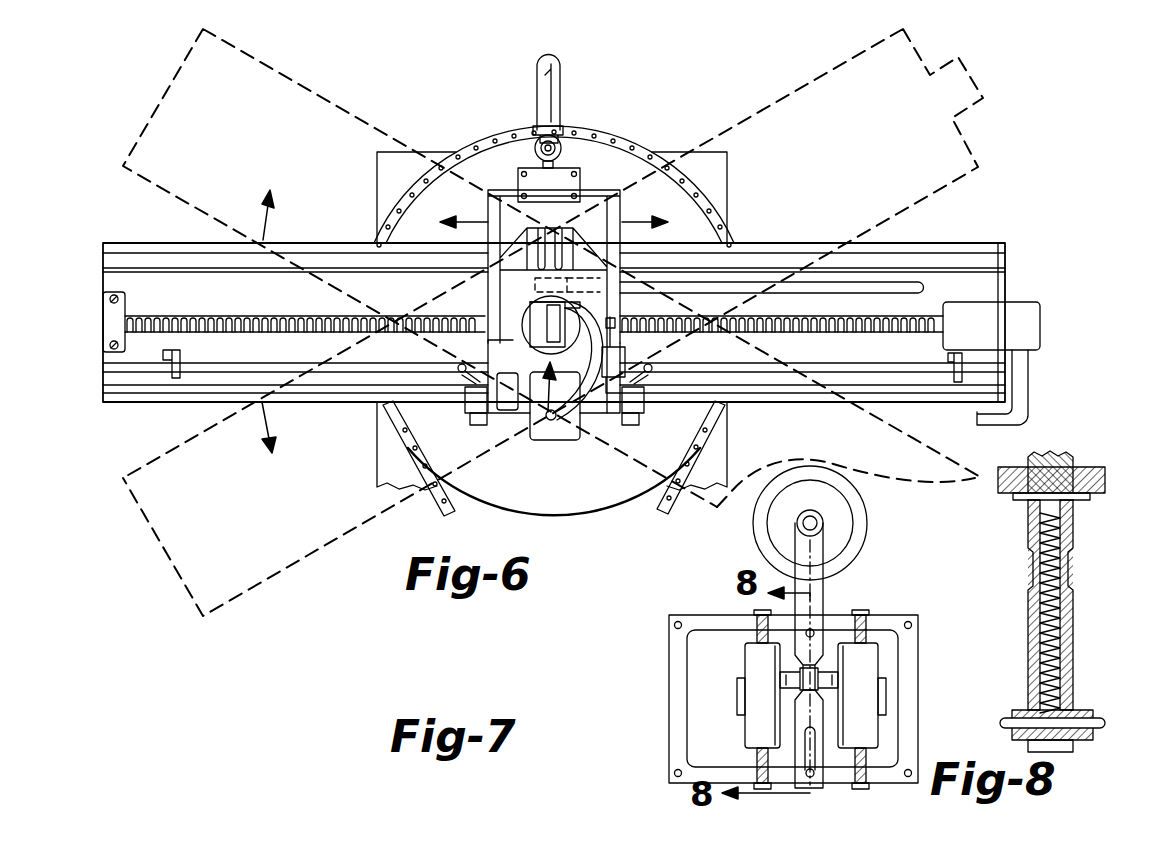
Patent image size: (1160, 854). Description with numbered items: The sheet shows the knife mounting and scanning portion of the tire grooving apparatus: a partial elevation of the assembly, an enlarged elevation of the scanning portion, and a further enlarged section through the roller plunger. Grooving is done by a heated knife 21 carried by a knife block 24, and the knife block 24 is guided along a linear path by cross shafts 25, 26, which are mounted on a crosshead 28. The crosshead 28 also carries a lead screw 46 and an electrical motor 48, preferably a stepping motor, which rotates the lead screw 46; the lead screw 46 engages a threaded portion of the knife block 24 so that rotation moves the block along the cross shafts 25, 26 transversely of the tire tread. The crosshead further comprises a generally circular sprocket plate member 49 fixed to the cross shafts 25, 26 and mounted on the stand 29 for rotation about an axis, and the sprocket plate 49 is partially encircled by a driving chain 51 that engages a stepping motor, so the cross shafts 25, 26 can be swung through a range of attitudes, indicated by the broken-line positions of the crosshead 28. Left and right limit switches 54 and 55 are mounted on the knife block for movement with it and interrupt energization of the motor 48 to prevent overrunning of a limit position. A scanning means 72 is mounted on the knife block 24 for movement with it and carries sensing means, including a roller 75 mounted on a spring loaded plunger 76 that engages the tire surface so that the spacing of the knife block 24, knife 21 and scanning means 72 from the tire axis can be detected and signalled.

In FIG. 6, the heated knife 21 is at (546, 425).
In FIG. 6, the knife block 24 is at (515, 300).
In FIG. 6, the cross shaft 25 is at (950, 268).
In FIG. 6, the cross shaft 26 is at (933, 383).
In FIG. 6, the crosshead 28 is at (313, 87).
In FIG. 6, the stand 29 is at (715, 168).
In FIG. 6, the lead screw 46 is at (246, 320).
In FIG. 6, the electrical motor 48 is at (1030, 319).
In FIG. 6, the sprocket plate member 49 is at (606, 492).
In FIG. 6, the driving chain 51 is at (480, 100).
In FIG. 6, the left limit switch 54 is at (466, 414).
In FIG. 6, the right limit switch 55 is at (643, 412).
In FIG. 6, the scanning means 72 is at (587, 157).
In FIG. 7, the scanning means 72 is at (930, 560).
In FIG. 8, the scanning means 72 is at (1097, 437).
In FIG. 6, the roller 75 is at (539, 156).
In FIG. 7, the roller 75 is at (854, 508).
In FIG. 7, the spring loaded plunger 76 is at (823, 585).
In FIG. 8, the spring loaded plunger 76 is at (1032, 598).